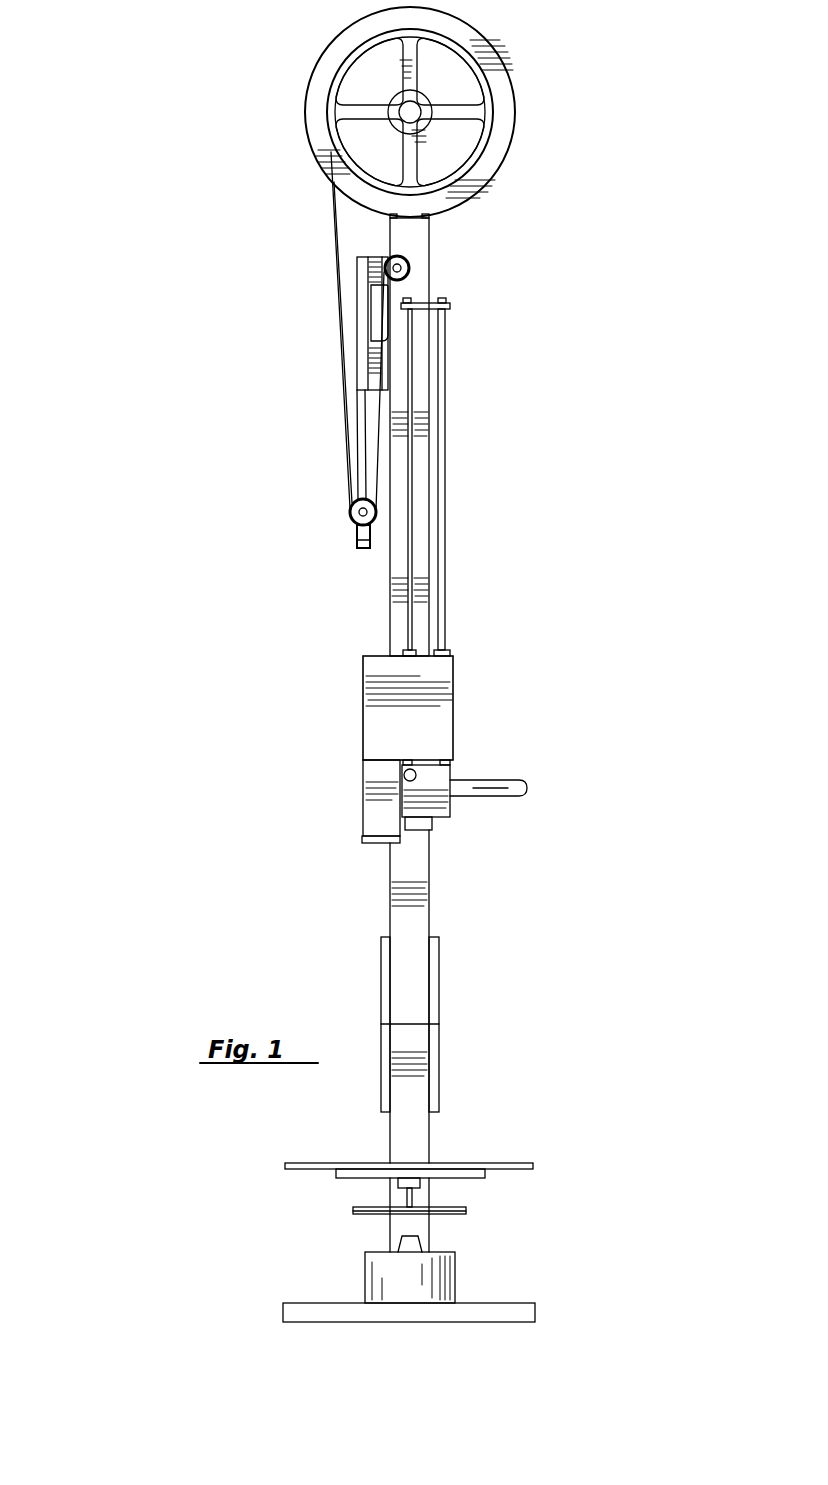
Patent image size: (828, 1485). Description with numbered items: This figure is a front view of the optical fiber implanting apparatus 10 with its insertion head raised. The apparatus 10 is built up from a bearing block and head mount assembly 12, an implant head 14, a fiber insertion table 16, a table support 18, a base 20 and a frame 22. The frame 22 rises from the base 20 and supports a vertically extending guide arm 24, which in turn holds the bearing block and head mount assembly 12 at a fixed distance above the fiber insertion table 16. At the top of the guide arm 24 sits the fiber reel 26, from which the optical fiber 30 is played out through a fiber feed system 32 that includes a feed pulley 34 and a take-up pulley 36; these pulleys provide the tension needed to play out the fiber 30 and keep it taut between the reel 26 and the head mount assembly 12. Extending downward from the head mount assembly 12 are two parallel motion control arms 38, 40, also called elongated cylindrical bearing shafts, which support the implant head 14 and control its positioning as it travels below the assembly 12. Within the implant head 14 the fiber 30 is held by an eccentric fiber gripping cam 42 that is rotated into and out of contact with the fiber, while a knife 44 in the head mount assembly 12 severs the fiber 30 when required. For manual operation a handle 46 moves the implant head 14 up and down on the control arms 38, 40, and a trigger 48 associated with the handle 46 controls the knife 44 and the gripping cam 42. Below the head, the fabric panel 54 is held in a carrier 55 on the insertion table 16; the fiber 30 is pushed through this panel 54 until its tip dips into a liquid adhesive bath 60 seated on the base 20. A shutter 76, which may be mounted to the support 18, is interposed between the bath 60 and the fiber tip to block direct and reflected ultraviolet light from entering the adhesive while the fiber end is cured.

The optical fiber implanting apparatus 10 is at (200, 547).
The bearing block and head mount assembly 12 is at (445, 688).
The implant head 14 is at (442, 778).
The fiber insertion table 16 is at (455, 1178).
The table support 18 is at (404, 1180).
The base 20 is at (535, 1310).
The frame 22 is at (440, 975).
The guide arm 24 is at (393, 637).
The fiber reel 26 is at (470, 32).
The optical fiber 30 is at (337, 205).
The fiber feed system 32 is at (358, 352).
The feed pulley 34 is at (350, 507).
The take-up pulley 36 is at (412, 262).
The motion control arm 38 is at (413, 388).
The motion control arm 40 is at (433, 522).
The fiber gripping cam 42 is at (408, 770).
The knife 44 is at (372, 840).
The handle 46 is at (510, 796).
The trigger 48 is at (458, 798).
The fabric panel 54 is at (492, 1163).
The carrier 55 is at (522, 1172).
The liquid adhesive bath 60 is at (368, 1262).
The shutter 76 is at (450, 1215).